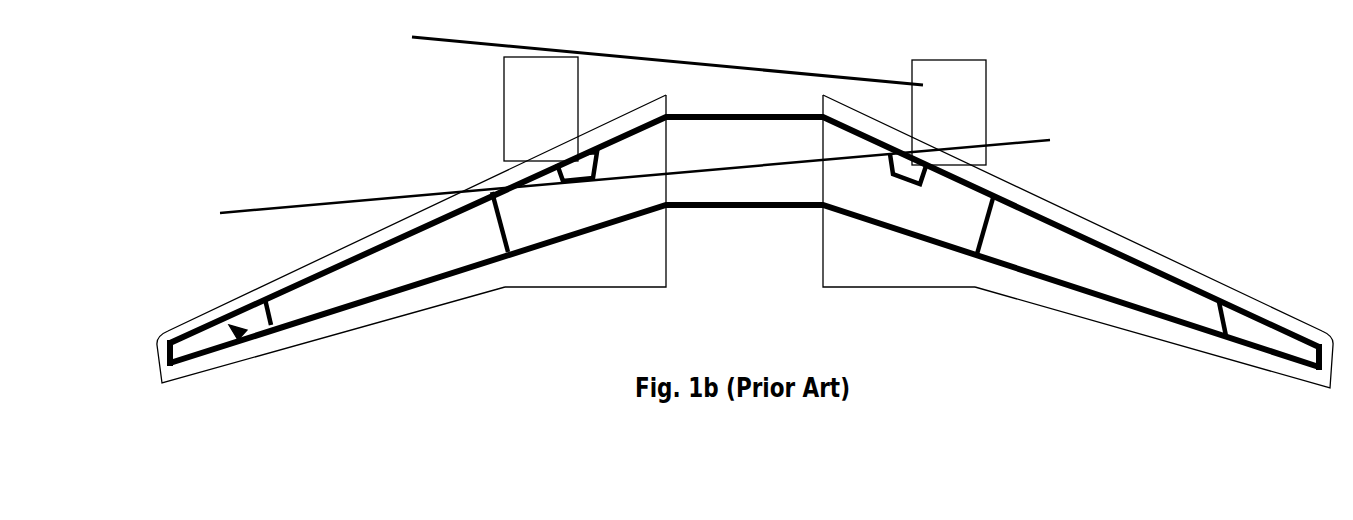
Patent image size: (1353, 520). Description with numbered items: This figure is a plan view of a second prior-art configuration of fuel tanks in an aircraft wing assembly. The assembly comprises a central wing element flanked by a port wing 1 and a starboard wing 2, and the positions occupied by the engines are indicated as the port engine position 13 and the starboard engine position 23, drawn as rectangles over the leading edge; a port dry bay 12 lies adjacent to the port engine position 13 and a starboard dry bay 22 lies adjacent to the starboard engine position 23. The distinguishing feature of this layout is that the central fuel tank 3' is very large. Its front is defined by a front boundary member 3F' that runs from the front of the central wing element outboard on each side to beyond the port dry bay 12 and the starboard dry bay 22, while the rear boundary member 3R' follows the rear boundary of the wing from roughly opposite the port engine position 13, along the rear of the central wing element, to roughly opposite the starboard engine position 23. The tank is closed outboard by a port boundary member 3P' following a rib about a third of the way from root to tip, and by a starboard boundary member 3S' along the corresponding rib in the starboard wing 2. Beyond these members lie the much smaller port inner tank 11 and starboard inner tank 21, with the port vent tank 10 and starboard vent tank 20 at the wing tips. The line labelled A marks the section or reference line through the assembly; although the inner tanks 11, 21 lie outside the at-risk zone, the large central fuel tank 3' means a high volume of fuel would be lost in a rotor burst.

The port wing 1 is at (380, 325).
The starboard wing 2 is at (1018, 302).
The central fuel tank 3' is at (886, 190).
The front boundary member 3F' is at (744, 223).
The rear boundary member 3R' is at (744, 315).
The port boundary member 3P' is at (514, 277).
The starboard boundary member 3S' is at (926, 279).
The port vent tank 10 is at (240, 335).
The port inner tank 11 is at (467, 247).
The port dry bay 12 is at (580, 182).
The port engine position 13 is at (504, 93).
The starboard vent tank 20 is at (1283, 348).
The starboard inner tank 21 is at (1168, 302).
The starboard dry bay 22 is at (915, 172).
The starboard engine position 23 is at (986, 77).
The section line A- A is at (635, 125).